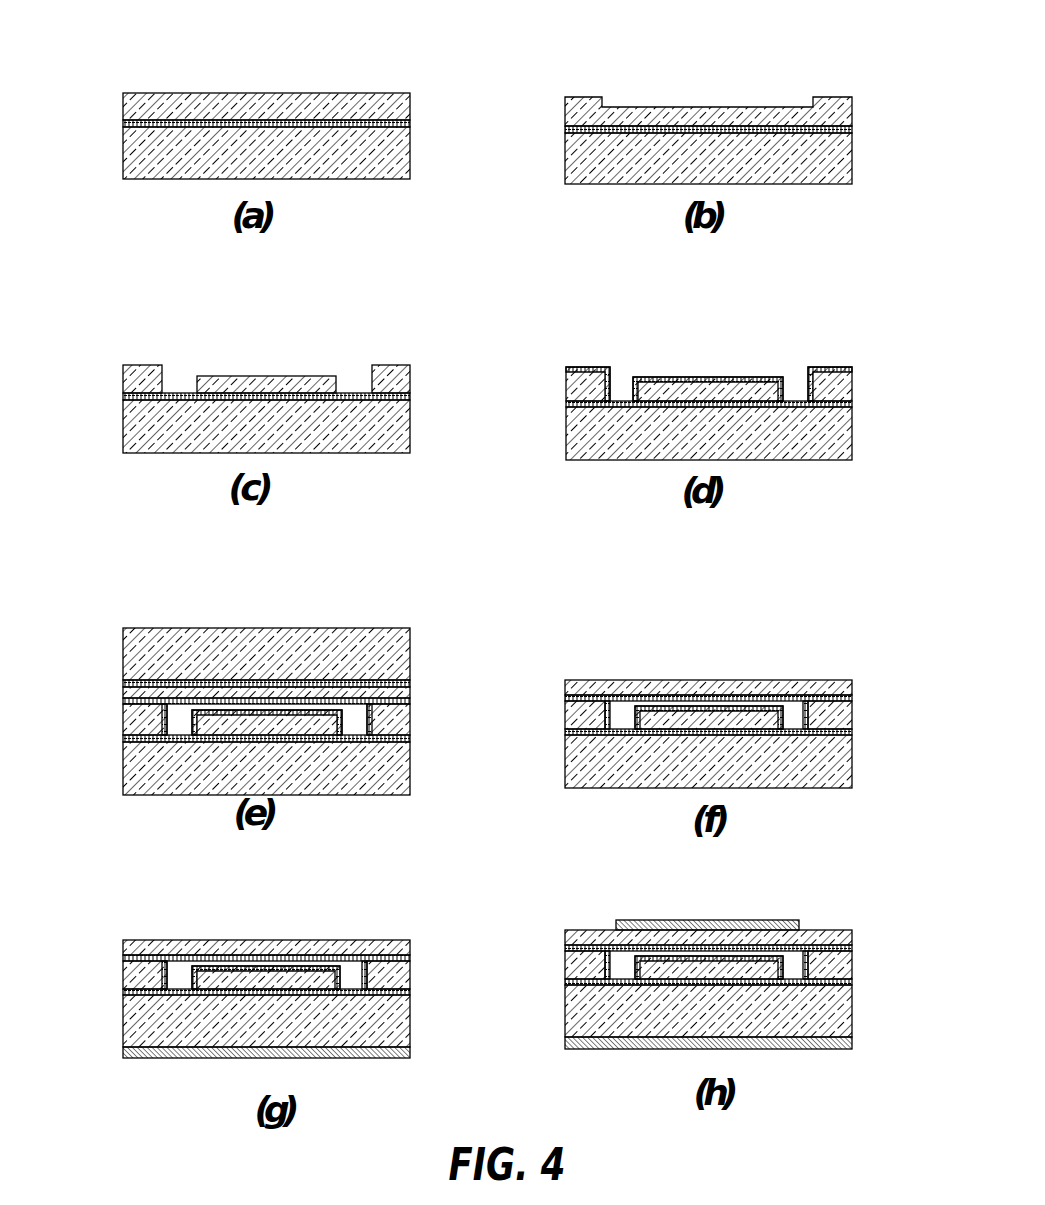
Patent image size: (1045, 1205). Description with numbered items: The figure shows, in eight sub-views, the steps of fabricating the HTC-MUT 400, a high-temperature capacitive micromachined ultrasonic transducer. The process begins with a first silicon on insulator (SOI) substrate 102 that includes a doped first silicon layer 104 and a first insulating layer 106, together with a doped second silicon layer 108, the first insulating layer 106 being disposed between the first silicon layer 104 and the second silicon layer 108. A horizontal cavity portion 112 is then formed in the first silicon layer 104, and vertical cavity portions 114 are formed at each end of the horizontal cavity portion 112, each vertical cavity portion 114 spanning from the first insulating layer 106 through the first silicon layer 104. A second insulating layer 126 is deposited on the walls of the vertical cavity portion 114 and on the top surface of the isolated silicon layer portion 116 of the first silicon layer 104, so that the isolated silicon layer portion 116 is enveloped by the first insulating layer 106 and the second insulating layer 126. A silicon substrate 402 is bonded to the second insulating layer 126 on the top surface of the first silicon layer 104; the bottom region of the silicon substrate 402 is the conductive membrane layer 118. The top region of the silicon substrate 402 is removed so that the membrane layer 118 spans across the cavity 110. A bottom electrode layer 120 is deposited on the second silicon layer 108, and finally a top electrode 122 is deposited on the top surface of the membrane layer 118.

The HTC-MUT 400 is at (120, 67).
The silicon substrate 402 is at (112, 655).
The first silicon on insulator (SOI) substrate 102 is at (112, 114).
The first silicon layer 104 is at (410, 102).
The first insulating layer 106 is at (123, 123).
The second silicon layer 108 is at (410, 147).
The cavity 110 is at (183, 722).
The horizontal cavity portion 112 is at (683, 98).
The vertical cavity portion 114 is at (375, 378).
The isolated silicon layer portion 116 is at (258, 377).
The membrane layer 118 is at (340, 683).
The bottom electrode layer 120 is at (193, 1062).
The top electrode 122 is at (753, 922).
The second insulating layer 126 is at (760, 380).